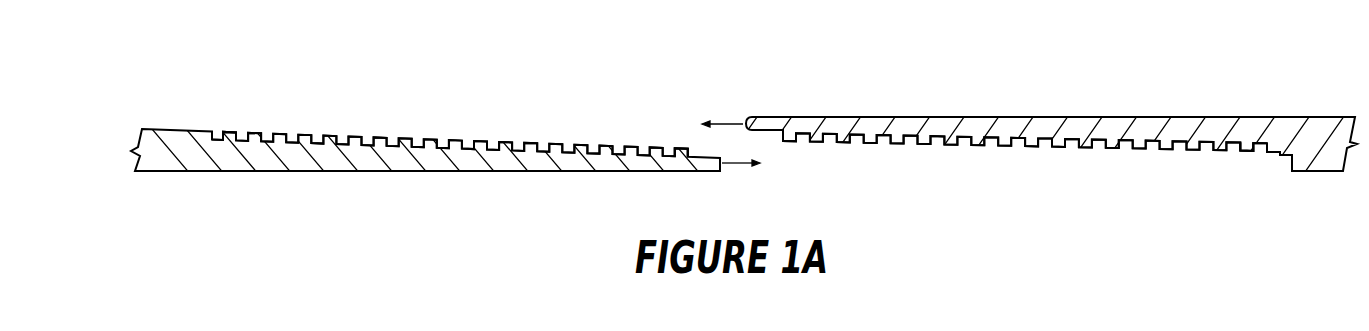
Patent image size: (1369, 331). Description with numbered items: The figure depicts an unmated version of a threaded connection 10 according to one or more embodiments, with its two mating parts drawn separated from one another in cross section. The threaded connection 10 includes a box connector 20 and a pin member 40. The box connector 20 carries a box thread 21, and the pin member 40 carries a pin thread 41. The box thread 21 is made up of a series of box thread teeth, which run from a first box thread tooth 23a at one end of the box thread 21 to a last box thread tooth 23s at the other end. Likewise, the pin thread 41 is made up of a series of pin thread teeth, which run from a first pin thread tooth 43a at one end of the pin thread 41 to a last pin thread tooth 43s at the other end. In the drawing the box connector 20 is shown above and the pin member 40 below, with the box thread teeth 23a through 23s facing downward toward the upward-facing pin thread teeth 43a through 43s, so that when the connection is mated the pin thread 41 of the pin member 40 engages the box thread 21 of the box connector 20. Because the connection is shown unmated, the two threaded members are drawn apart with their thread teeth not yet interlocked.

The threaded connection 10 is at (117, 62).
The box connector 20 is at (1215, 117).
The box thread 21 is at (1067, 174).
The box thread tooth 23a is at (785, 142).
The box thread tooth 23s is at (1238, 152).
The pin member 40 is at (269, 172).
The pin thread 41 is at (433, 86).
The pin thread tooth 43s is at (223, 131).
The pin thread tooth 43a is at (678, 148).